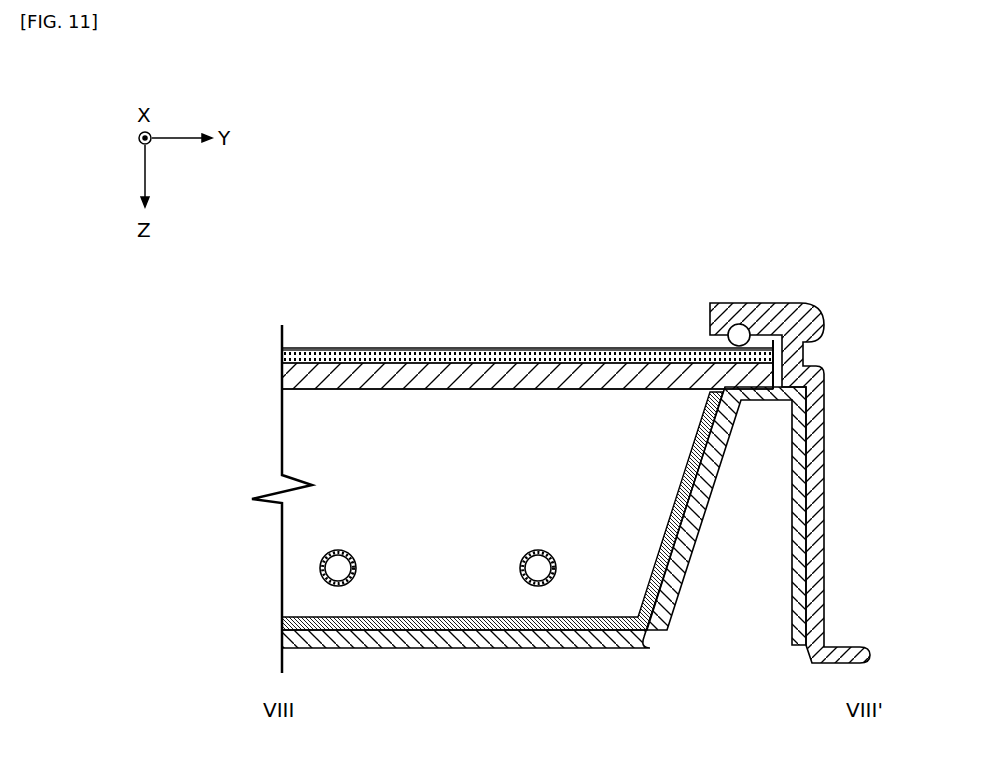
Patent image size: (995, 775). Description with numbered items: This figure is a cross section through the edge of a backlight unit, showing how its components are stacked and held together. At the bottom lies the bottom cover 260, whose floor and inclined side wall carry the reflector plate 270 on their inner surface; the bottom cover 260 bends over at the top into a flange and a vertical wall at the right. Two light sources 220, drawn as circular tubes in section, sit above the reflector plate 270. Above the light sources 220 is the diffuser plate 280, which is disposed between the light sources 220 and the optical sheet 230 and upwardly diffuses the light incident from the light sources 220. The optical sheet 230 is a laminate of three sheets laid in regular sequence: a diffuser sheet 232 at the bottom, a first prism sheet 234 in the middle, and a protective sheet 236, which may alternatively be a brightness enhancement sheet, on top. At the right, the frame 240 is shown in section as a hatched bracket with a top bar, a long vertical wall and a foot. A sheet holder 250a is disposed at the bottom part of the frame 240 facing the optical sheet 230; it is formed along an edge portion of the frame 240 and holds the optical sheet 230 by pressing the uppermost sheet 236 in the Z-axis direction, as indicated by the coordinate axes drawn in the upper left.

The light source 220 is at (336, 588).
The optical sheet 230 is at (183, 303).
The diffuser sheet 232 is at (290, 378).
The first prism sheet 234 is at (290, 354).
The protective sheet 236 is at (290, 348).
The frame 240 is at (797, 313).
The sheet holder 250a is at (738, 344).
The bottom cover 260 is at (480, 637).
The reflector plate 270 is at (282, 620).
The diffuser plate 280 is at (367, 377).